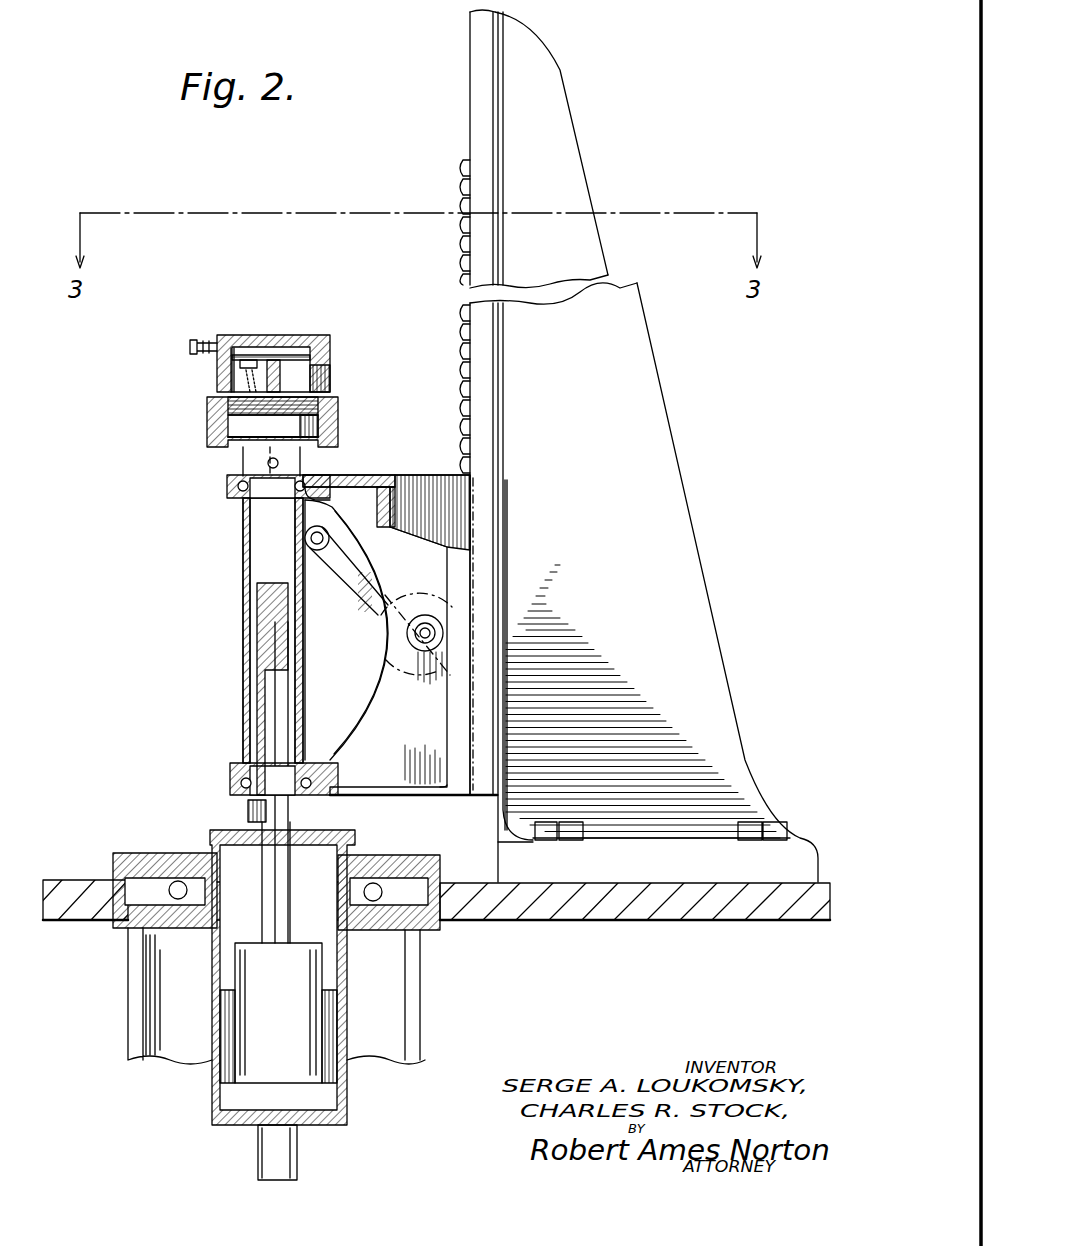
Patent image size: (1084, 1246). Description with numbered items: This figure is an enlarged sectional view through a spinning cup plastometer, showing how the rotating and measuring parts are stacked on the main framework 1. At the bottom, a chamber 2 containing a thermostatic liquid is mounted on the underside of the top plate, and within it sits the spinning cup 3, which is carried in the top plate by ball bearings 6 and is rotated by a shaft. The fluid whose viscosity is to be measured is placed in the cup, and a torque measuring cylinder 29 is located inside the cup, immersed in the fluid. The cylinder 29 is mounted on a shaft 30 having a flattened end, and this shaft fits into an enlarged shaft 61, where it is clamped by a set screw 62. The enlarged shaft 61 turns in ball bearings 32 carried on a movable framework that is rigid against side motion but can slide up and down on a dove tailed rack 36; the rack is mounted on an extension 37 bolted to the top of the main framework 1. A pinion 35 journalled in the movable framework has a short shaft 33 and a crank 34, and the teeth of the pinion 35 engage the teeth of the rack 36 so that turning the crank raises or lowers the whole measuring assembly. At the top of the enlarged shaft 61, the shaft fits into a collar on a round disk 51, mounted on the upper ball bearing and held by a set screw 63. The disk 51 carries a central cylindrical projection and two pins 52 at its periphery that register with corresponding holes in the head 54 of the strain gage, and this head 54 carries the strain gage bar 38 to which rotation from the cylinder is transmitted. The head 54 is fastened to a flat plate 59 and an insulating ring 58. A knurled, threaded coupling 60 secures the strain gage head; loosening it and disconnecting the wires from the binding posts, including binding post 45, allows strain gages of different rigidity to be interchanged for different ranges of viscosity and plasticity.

The main framework 1 is at (715, 925).
The chamber 2 is at (425, 970).
The spinning cup 3 is at (348, 975).
The ball bearings 6 is at (150, 855).
The torque measuring cylinder 29 is at (300, 940).
The shaft 30 is at (290, 880).
The ball bearings 32 is at (230, 495).
The short shaft 33 is at (420, 636).
The crank 34 is at (350, 590).
The pinion 35 is at (422, 590).
The dove tailed rack 36 is at (460, 232).
The extension 37 is at (575, 143).
The strain gage bar 38 is at (281, 380).
The binding post 45 is at (200, 350).
The round disk 51 is at (335, 425).
The pins 52 is at (325, 398).
The head 54 is at (335, 380).
The insulating ring 58 is at (280, 333).
The flat plate 59 is at (305, 335).
The knurled coupling 60 is at (340, 447).
The enlarged shaft 61 is at (263, 553).
The set screw 62 is at (248, 810).
The set screw 63 is at (267, 463).